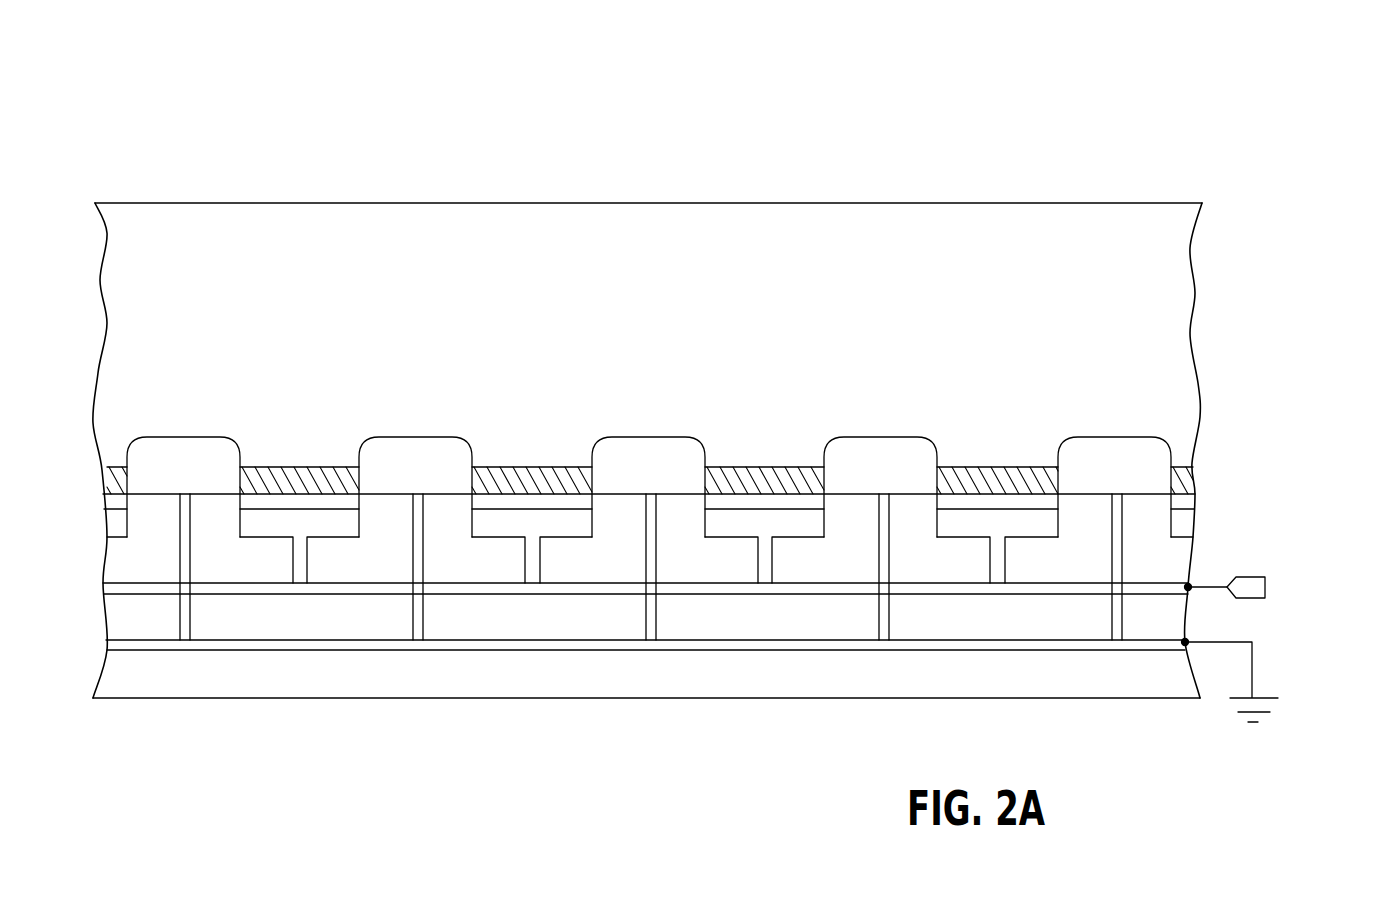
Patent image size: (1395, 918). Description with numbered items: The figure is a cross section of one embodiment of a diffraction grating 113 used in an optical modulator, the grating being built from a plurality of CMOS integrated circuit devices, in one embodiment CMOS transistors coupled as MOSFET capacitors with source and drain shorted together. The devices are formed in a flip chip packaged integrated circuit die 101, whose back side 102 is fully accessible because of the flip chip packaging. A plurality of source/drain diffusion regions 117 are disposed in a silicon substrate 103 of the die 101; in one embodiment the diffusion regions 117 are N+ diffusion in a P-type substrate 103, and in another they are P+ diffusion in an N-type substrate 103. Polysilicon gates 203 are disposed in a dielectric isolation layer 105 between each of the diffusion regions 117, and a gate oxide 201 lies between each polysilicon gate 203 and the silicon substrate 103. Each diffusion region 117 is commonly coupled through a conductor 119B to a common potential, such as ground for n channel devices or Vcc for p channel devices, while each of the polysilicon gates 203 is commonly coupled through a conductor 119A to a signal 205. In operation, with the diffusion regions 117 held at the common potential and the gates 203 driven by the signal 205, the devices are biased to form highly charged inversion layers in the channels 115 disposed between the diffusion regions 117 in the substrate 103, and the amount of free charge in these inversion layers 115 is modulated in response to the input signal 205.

The diffraction grating 113 is at (1256, 57).
The integrated circuit die 101 is at (1208, 192).
The back side 102 is at (983, 197).
The silicon substrate 103 is at (1178, 248).
The dielectric isolation layer 105 is at (1178, 547).
The channels 115 is at (260, 467).
The source/drain diffusion regions 117 is at (163, 437).
The conductor 119A is at (253, 582).
The conductor 119B is at (552, 637).
The gate oxide 201 is at (250, 499).
The polysilicon gates 203 is at (340, 528).
The signal 205 is at (1323, 603).